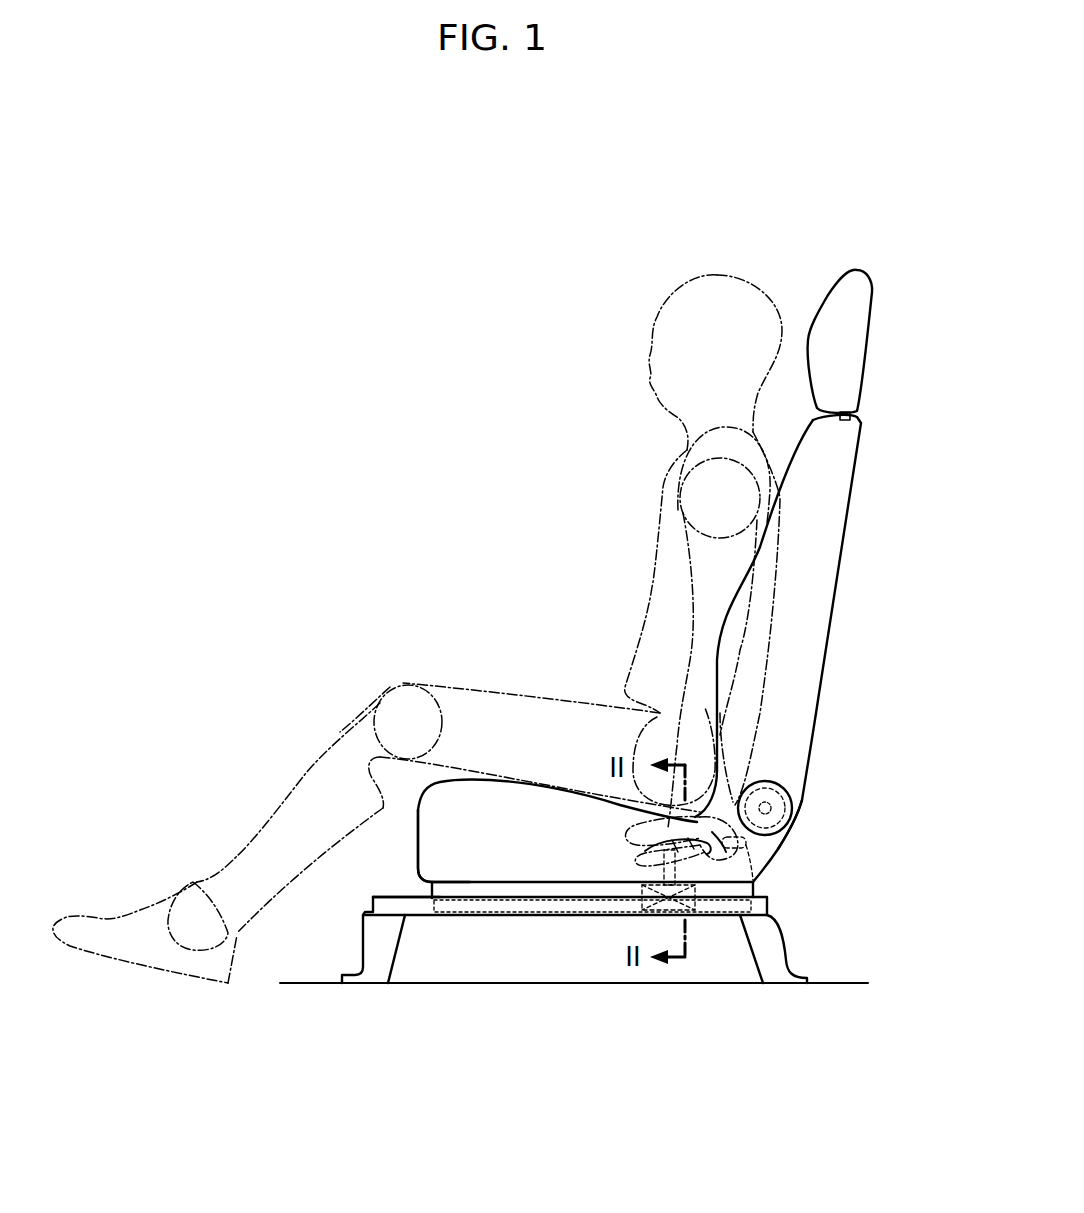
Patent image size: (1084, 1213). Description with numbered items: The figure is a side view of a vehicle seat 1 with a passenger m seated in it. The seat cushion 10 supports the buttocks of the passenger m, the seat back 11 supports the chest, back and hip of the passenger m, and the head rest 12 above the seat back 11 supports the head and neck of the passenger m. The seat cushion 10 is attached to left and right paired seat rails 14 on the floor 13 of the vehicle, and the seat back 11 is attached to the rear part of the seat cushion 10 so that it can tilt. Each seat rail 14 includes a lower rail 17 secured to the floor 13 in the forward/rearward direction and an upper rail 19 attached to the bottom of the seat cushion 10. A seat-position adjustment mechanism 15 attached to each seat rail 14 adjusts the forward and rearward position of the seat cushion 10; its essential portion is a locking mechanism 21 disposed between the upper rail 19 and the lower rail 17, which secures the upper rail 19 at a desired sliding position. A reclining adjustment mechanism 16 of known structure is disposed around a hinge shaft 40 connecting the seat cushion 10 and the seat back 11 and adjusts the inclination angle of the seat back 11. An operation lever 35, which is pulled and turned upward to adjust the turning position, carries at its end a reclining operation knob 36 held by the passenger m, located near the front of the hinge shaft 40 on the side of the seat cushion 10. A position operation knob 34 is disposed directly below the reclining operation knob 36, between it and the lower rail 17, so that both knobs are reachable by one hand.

The vehicle seat 1 is at (612, 605).
The seat cushion 10 is at (472, 788).
The seat back 11 is at (822, 627).
The head rest 12 is at (866, 343).
The floor 13 is at (307, 982).
The seat rail 14 is at (420, 930).
The seat-position adjustment mechanism 15 is at (688, 922).
The reclining adjustment mechanism 16 is at (800, 829).
The lower rail 17 is at (393, 900).
The upper rail 19 is at (447, 887).
The locking mechanism 21 is at (642, 900).
The position operation knob 34 is at (622, 865).
The operation lever 35 is at (748, 845).
The reclining operation knob 36 is at (726, 852).
The hinge shaft 40 is at (790, 792).
The passenger m is at (673, 293).